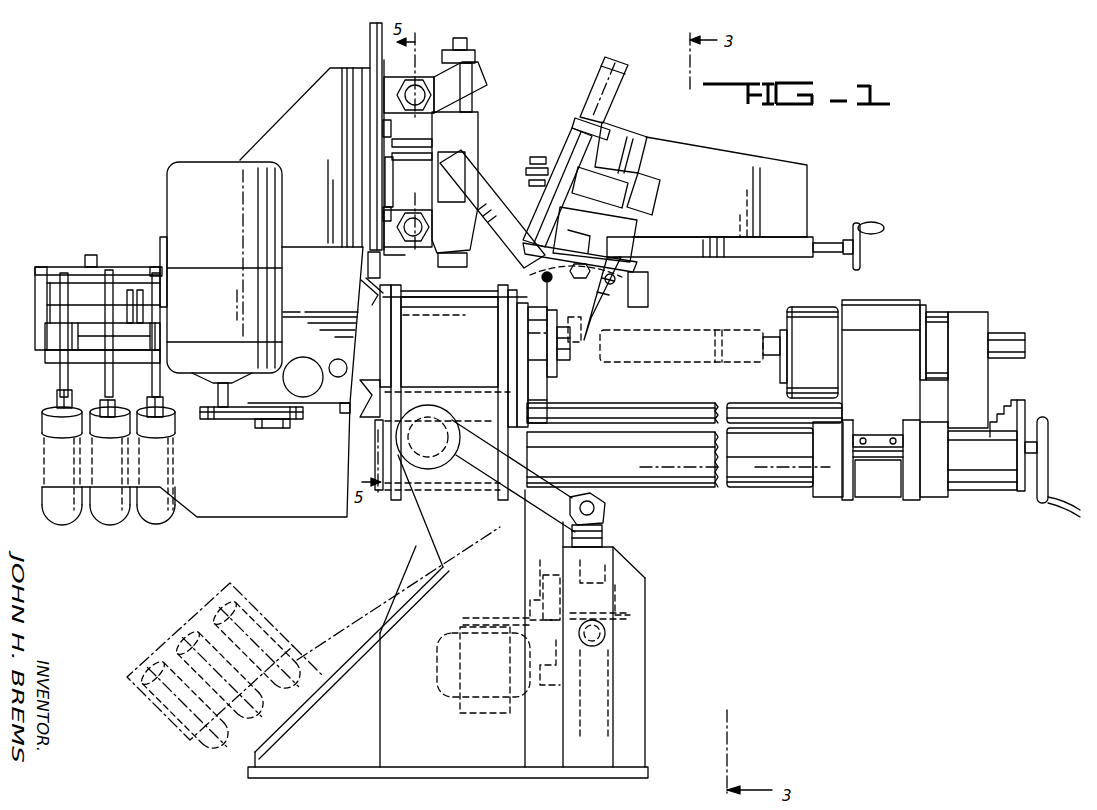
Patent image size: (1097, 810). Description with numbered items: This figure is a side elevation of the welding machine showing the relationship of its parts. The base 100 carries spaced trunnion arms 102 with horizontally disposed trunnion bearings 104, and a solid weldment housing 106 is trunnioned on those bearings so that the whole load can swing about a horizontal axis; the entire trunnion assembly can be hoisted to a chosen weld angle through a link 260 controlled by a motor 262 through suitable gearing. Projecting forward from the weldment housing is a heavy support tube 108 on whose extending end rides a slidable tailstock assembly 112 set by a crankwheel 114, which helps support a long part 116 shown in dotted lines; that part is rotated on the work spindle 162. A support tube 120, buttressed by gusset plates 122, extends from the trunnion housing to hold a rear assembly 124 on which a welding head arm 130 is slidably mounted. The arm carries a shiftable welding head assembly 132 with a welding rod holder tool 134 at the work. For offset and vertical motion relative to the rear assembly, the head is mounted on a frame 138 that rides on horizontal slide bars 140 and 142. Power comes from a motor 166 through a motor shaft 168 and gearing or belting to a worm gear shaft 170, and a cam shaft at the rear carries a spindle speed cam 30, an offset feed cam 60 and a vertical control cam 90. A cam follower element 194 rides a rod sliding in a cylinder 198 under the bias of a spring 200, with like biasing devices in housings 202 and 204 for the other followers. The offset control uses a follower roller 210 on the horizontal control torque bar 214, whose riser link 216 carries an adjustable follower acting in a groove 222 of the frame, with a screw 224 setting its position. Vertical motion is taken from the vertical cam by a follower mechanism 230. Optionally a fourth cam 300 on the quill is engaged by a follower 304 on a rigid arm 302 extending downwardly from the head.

The spindle speed cam 30 is at (154, 272).
The horizontal or offset feed cam 60 is at (106, 270).
The vertical control cam 90 is at (58, 276).
The base 100 is at (637, 680).
The trunnion arms 102 is at (426, 522).
The trunnion bearings 104 is at (432, 447).
The weldment housing 106 is at (461, 392).
The support tube 108 is at (694, 470).
The tailstock assembly 112 is at (877, 328).
The crankwheel 114 is at (1047, 417).
The part 116 is at (699, 340).
The support tube 120 is at (360, 322).
The gusset plates 122 is at (384, 383).
The rear assembly 124 is at (158, 222).
The welding head arm 130 is at (520, 137).
The welding head assembly 132 is at (575, 228).
The welding rod holder tool 134 is at (620, 305).
The frame 138 is at (433, 68).
The horizontal slide bar 140 is at (413, 225).
The horizontal slide bar 142 is at (466, 92).
The work spindle 162 is at (572, 347).
The motor 166 is at (233, 221).
The motor shaft 168 is at (222, 420).
The worm gear shaft 170 is at (272, 428).
The cam follower element 194 is at (150, 403).
The cylinder 198 is at (168, 522).
The spring 200 is at (80, 332).
The housing 202 is at (115, 515).
The housing 204 is at (58, 518).
The follower roller 210 is at (103, 401).
The horizontal control torque bar 214 is at (362, 282).
The riser link 216 is at (367, 267).
The groove 222 is at (385, 163).
The screw 224 is at (370, 45).
The follower mechanism 230 is at (56, 400).
The link 260 is at (594, 514).
The motor 262 is at (470, 662).
The fourth cam 300 is at (556, 377).
The rigid arm 302 is at (483, 204).
The follower 304 is at (541, 281).